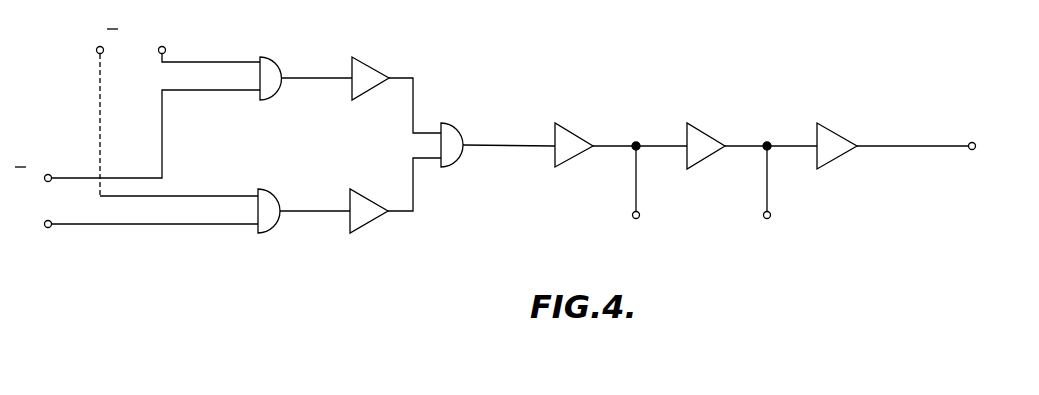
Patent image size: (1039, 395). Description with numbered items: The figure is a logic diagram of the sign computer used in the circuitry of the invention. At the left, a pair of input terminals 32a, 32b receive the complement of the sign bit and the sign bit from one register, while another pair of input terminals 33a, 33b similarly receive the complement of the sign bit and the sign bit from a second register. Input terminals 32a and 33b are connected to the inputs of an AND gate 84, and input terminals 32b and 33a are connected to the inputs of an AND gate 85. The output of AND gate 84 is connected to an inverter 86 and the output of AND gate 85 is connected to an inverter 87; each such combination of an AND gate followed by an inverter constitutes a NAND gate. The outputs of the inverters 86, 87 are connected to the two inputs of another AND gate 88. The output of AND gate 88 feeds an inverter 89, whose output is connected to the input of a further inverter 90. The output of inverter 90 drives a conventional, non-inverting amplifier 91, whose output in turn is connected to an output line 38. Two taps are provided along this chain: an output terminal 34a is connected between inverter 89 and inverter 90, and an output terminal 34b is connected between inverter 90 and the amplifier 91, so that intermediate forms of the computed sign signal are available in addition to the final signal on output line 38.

The input terminal 32a is at (96, 54).
The input terminal 32b is at (166, 50).
The input terminal 33a is at (51, 174).
The input terminal 33b is at (51, 228).
The AND gate 84 is at (262, 233).
The AND gate 85 is at (276, 58).
The inverter 86 is at (360, 231).
The inverter 87 is at (368, 57).
The AND gate 88 is at (455, 125).
The inverter 89 is at (570, 124).
The inverter 90 is at (700, 124).
The non-inverting amplifier 91 is at (838, 133).
The output terminal 34a is at (632, 196).
The output terminal 34b is at (762, 196).
The output line 38 is at (976, 143).